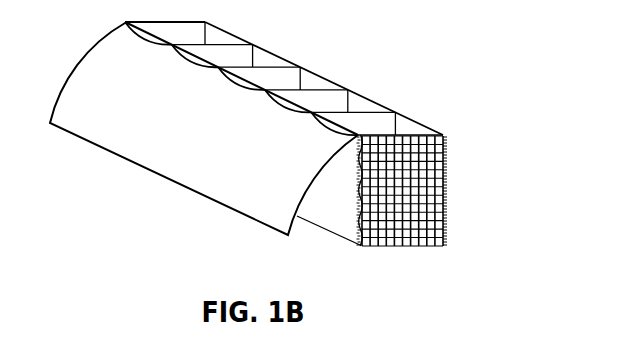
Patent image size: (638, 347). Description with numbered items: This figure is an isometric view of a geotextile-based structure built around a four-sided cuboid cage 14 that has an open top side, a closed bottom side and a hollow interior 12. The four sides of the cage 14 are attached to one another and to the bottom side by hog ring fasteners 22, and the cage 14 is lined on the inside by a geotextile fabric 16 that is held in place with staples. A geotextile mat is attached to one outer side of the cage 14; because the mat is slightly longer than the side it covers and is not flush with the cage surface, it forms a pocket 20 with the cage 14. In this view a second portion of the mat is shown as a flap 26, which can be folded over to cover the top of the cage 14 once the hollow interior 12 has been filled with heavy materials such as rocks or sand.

The hollow interior 12 is at (380, 128).
The cage 14 is at (402, 246).
The geotextile fabric 16 is at (365, 107).
The pocket 20 is at (357, 227).
The hog ring fasteners 22 is at (443, 135).
The flap 26 is at (168, 180).